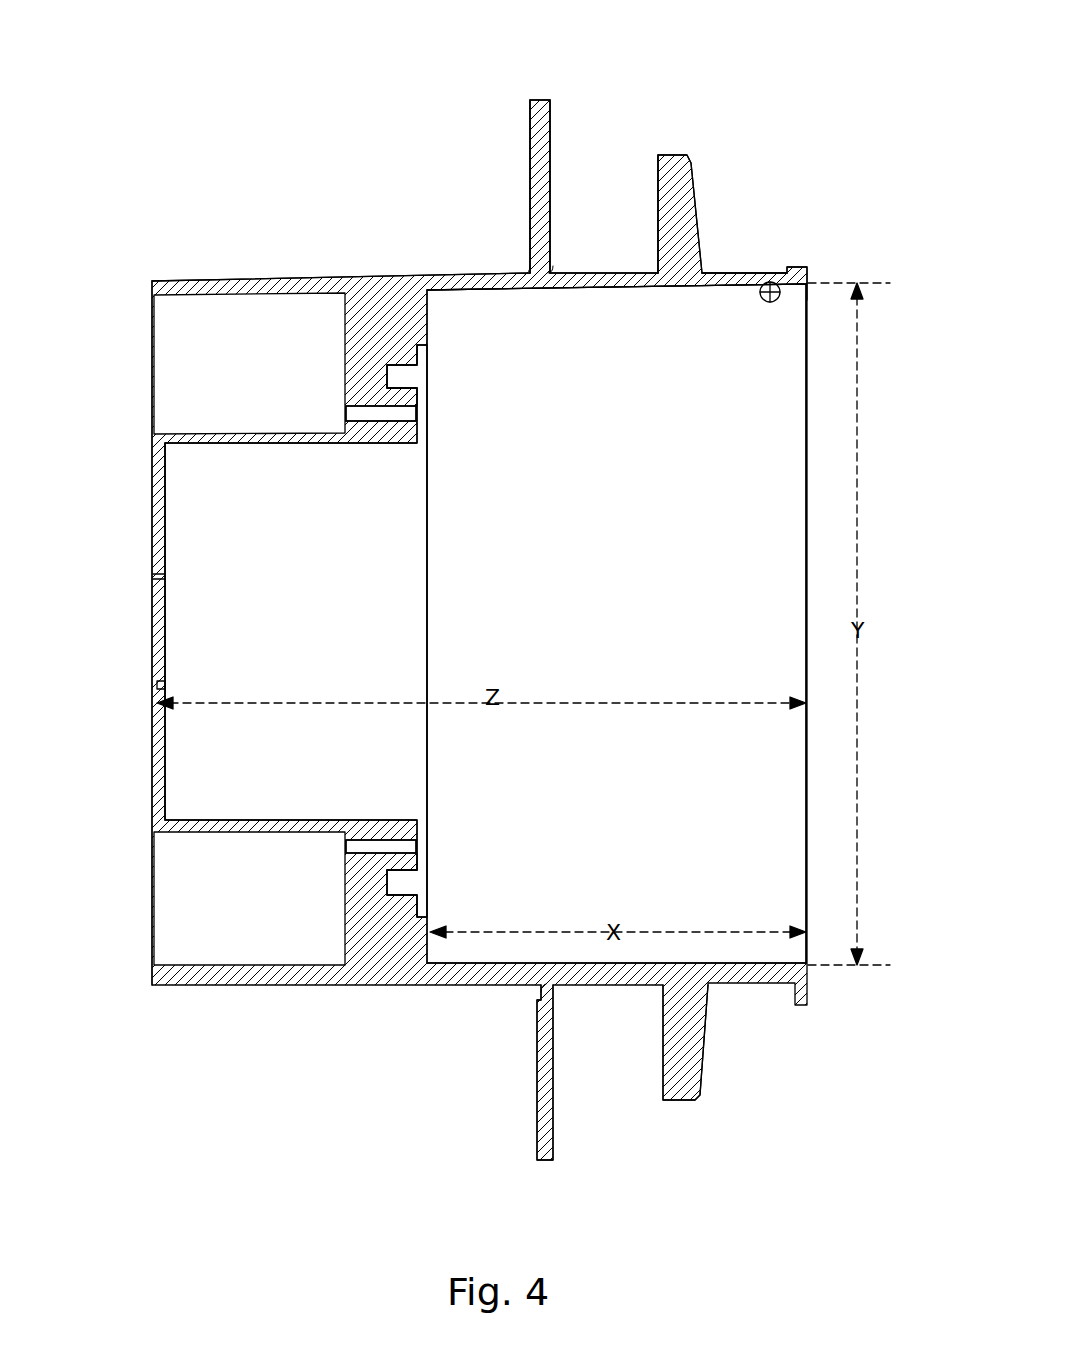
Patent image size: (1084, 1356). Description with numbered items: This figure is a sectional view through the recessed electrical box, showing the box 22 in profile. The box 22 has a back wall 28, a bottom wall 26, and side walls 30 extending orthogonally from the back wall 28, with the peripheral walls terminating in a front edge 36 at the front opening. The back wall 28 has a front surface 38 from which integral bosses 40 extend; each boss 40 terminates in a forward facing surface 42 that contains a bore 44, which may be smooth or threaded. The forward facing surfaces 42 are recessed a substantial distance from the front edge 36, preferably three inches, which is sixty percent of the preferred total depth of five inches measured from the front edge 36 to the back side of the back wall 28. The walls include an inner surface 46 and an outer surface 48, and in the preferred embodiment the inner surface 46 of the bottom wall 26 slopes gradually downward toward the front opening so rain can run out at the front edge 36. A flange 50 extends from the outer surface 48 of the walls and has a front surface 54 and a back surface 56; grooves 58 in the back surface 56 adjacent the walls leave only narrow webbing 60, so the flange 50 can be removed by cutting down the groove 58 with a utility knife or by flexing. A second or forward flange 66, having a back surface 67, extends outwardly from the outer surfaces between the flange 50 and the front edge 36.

The box 22 is at (285, 220).
The bottom wall 26 is at (725, 982).
The back wall 28 is at (156, 540).
The side walls 30 is at (626, 610).
The front edge 36 is at (808, 270).
The front surface 38 is at (180, 517).
The bosses 40 is at (395, 440).
The forward facing surfaces 42 is at (443, 398).
The bores 44 is at (383, 412).
The inner surface 46 is at (614, 305).
The outer surface 48 is at (735, 258).
The flange 50 is at (540, 98).
The front surface 54 is at (568, 135).
The back surface 56 is at (515, 135).
The grooves 58 is at (528, 268).
The webbing 60 is at (553, 990).
The second flange 66 is at (662, 152).
The back surface 67 is at (643, 218).